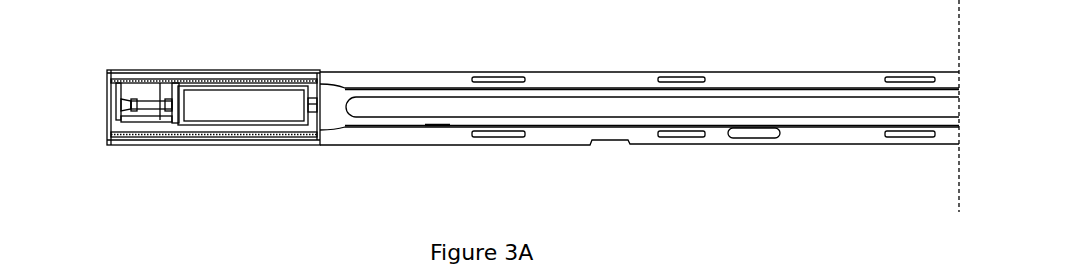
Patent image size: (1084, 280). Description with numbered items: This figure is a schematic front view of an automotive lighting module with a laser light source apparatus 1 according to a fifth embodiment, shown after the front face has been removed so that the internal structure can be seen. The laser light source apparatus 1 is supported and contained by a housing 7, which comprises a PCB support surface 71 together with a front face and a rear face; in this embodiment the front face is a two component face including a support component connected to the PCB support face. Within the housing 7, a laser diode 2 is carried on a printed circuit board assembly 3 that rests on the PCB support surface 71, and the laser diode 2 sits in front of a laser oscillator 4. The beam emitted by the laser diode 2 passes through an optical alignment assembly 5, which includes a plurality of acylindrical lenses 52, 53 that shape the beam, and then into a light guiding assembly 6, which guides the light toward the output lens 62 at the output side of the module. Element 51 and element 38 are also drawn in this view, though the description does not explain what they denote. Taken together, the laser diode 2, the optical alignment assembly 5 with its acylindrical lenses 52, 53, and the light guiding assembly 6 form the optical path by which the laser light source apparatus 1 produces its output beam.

The laser light source apparatus 1 is at (184, 76).
The laser diode 2 is at (203, 138).
The printed circuit board assembly 3 is at (183, 70).
The PCB support surface 71 is at (83, 101).
The housing 7 is at (155, 65).
The partition 38 is at (188, 64).
The optical alignment assembly 5 is at (131, 143).
The acylindrical lens 52 is at (159, 143).
The acylindrical lens 53 is at (206, 143).
The laser oscillator 4 is at (243, 136).
The connector 51 is at (330, 140).
The light guiding assembly 6 is at (628, 76).
The output lens 62 is at (652, 142).